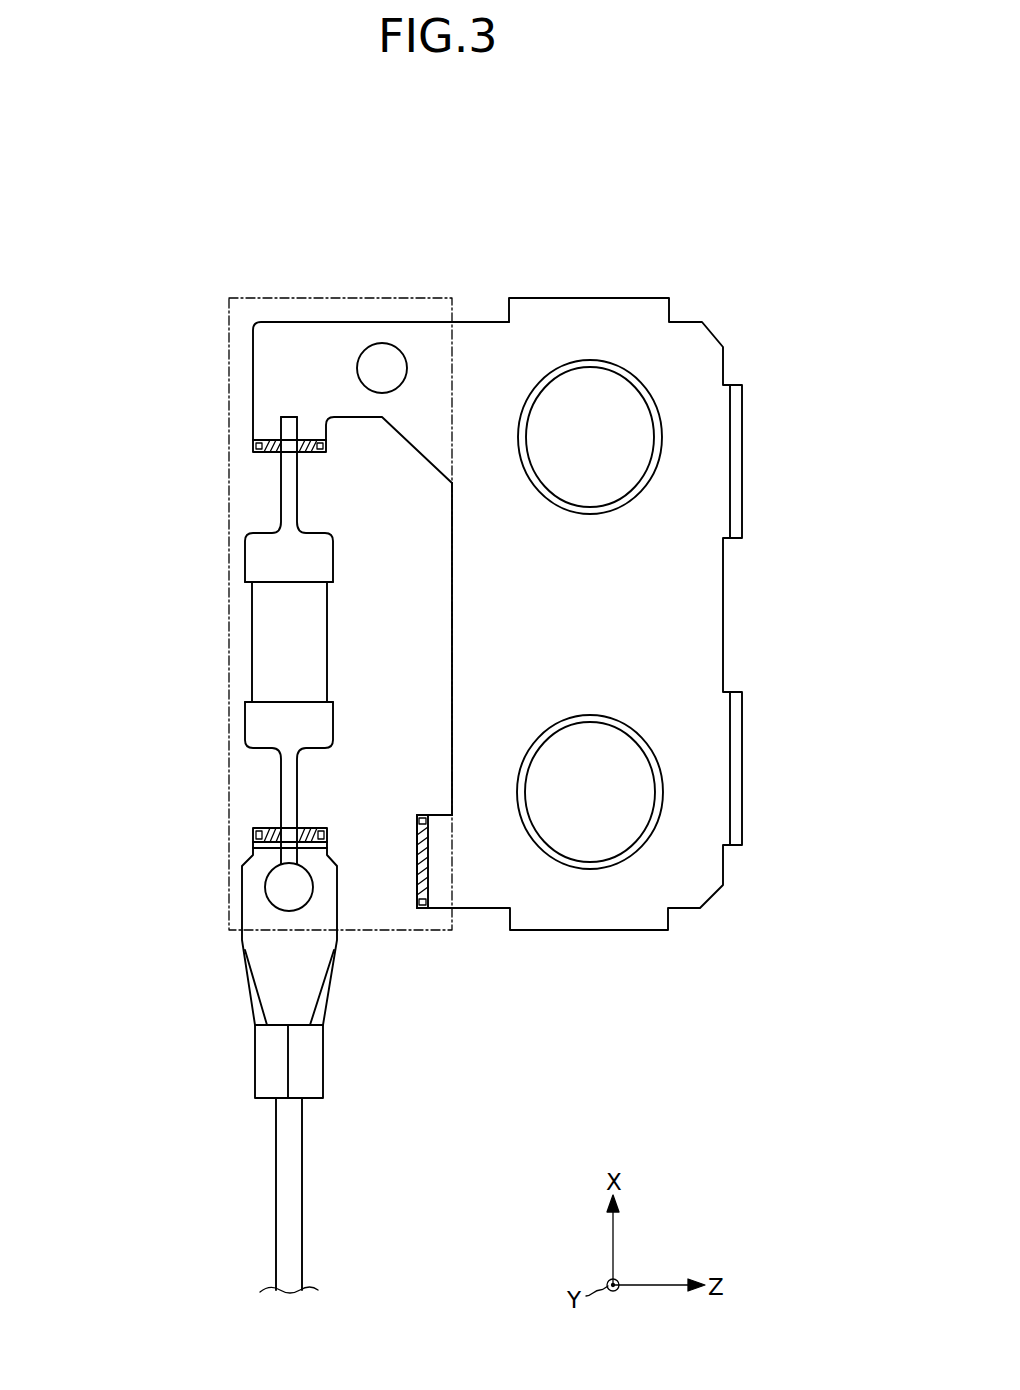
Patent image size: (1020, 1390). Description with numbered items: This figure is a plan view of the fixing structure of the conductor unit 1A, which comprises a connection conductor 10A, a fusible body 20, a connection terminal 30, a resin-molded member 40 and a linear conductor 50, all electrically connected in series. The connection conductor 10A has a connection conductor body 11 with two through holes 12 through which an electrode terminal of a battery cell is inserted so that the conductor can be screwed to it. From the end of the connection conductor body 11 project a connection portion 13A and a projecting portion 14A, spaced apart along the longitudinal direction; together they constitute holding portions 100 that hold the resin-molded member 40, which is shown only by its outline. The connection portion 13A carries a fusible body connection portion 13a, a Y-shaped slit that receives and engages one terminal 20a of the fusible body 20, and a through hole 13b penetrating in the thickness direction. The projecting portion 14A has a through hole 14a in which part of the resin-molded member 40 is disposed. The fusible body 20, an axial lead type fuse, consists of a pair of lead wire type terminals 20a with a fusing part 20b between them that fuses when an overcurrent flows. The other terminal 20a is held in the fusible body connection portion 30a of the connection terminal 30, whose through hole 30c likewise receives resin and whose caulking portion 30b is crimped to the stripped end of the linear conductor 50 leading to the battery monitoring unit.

The conductor unit 1A is at (495, 153).
The connection conductor 10A is at (588, 271).
The connection conductor body 11 is at (692, 607).
The through holes 12 is at (661, 436).
The connection portion 13A is at (279, 362).
The holding portions 100 is at (434, 861).
The fusible body connection portion 13a is at (268, 449).
The through hole 13b is at (382, 343).
The projecting portion 14A is at (425, 860).
The through hole 14a is at (418, 873).
The fusible body 20 is at (115, 518).
The terminals 20a is at (285, 490).
The fusing part 20b is at (272, 642).
The connection terminal 30 is at (115, 813).
The fusible body connection portion 30a is at (272, 833).
The caulking portion 30b is at (268, 1054).
The through hole 30c is at (263, 887).
The resin-molded member 40 is at (313, 298).
The linear conductor 50 is at (288, 1208).